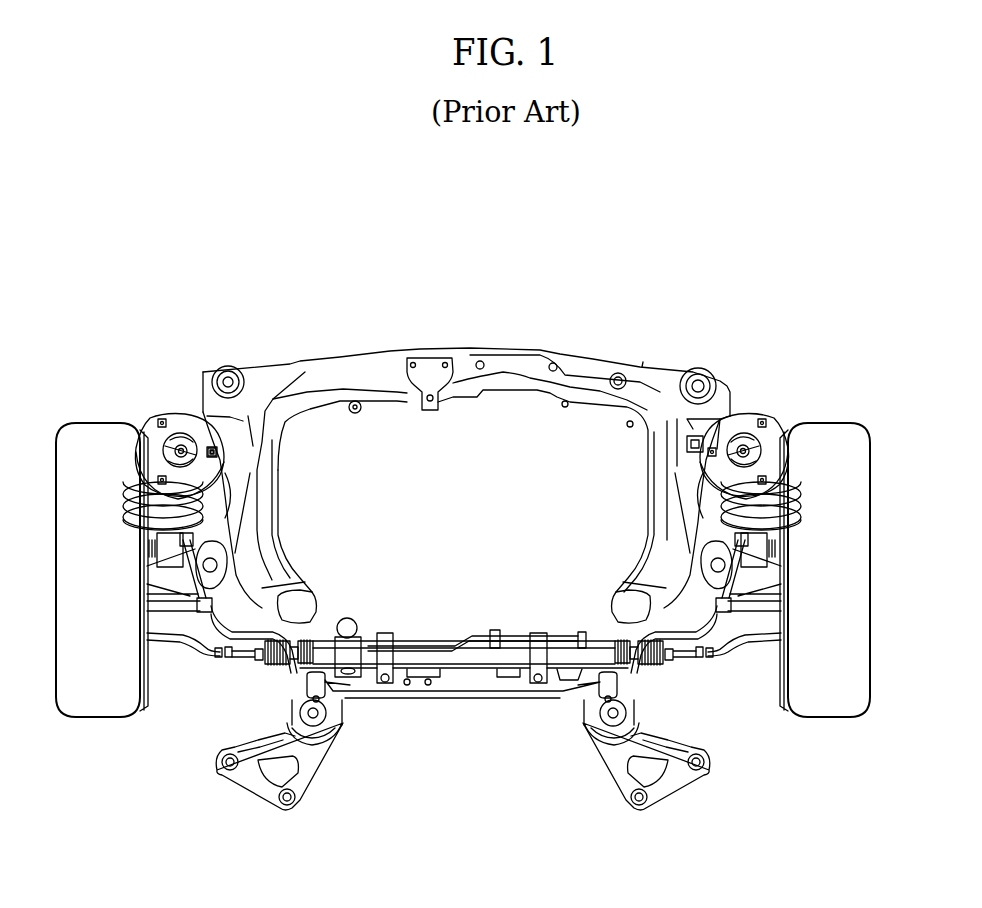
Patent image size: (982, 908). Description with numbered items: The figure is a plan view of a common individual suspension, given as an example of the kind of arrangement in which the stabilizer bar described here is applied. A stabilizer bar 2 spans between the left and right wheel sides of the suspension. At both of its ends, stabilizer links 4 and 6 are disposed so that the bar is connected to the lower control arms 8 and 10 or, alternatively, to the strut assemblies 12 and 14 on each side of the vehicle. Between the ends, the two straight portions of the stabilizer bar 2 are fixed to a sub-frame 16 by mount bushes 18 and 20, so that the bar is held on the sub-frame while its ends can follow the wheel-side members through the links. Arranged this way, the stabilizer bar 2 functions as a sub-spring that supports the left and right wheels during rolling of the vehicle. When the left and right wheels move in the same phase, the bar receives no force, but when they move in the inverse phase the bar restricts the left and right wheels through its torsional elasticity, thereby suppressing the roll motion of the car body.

The stabilizer bar 2 is at (425, 708).
The stabilizer link 4 is at (188, 540).
The stabilizer link 6 is at (757, 605).
The lower control arm 8 is at (232, 525).
The lower control arm 10 is at (680, 502).
The strut assembly 12 is at (156, 403).
The strut assembly 14 is at (752, 406).
The sub-frame 16 is at (465, 677).
The mount bush 18 is at (292, 690).
The mount bush 20 is at (636, 694).